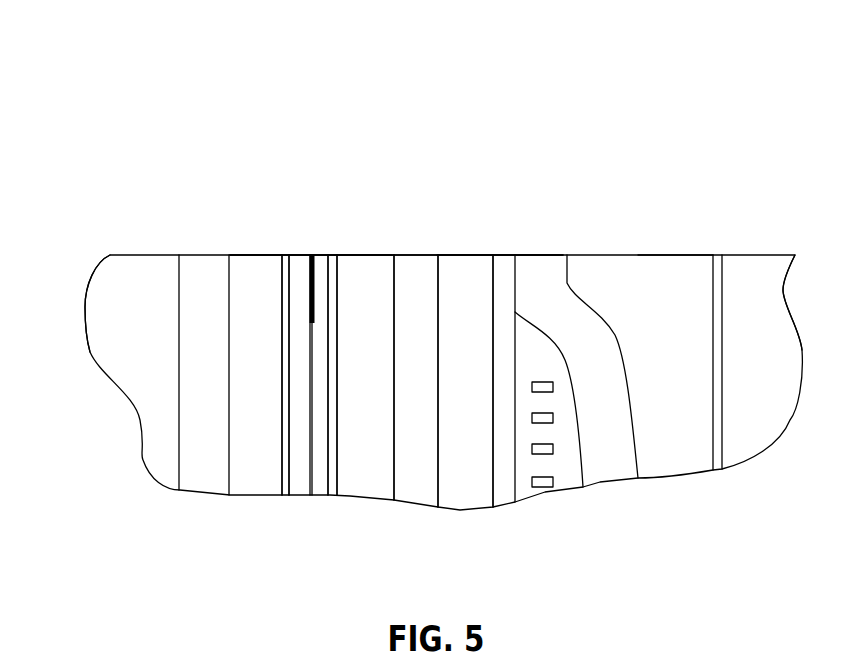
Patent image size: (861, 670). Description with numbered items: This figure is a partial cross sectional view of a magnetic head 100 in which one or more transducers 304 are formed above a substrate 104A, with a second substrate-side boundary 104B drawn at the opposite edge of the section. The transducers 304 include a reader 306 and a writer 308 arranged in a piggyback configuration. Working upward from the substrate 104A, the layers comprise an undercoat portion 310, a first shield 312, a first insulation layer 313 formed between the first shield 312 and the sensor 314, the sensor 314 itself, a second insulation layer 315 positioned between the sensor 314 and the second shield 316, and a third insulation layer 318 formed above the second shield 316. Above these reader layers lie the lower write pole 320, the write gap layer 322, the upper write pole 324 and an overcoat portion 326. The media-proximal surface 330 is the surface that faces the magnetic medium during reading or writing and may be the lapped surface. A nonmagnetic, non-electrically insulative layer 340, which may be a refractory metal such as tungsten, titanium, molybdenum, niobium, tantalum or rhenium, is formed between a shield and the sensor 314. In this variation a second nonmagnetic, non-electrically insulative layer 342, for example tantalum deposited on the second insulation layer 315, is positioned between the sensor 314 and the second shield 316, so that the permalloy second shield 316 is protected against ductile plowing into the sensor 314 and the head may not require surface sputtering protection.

The magnetic head 100 is at (50, 135).
The substrate 104A is at (143, 255).
The second outer edge 104B is at (750, 255).
The transducers 304 is at (435, 124).
The reader 306 is at (230, 177).
The writer 308 is at (437, 178).
The undercoat portion 310 is at (203, 495).
The first shield 312 is at (258, 498).
The first insulation layer 313 is at (298, 255).
The sensor 314 is at (312, 255).
The second insulation layer 315 is at (327, 255).
The second shield 316 is at (355, 497).
The third insulation layer 318 is at (413, 255).
The lower write pole 320 is at (455, 510).
The write gap layer 322 is at (505, 255).
The upper write pole 324 is at (607, 480).
The overcoat portion 326 is at (672, 478).
The media-proximal surface 330 is at (685, 248).
The nonmagnetic, non-electrically insulative layer 340 is at (283, 497).
The second nonmagnetic, non-electrically insulative layer 342 is at (333, 498).